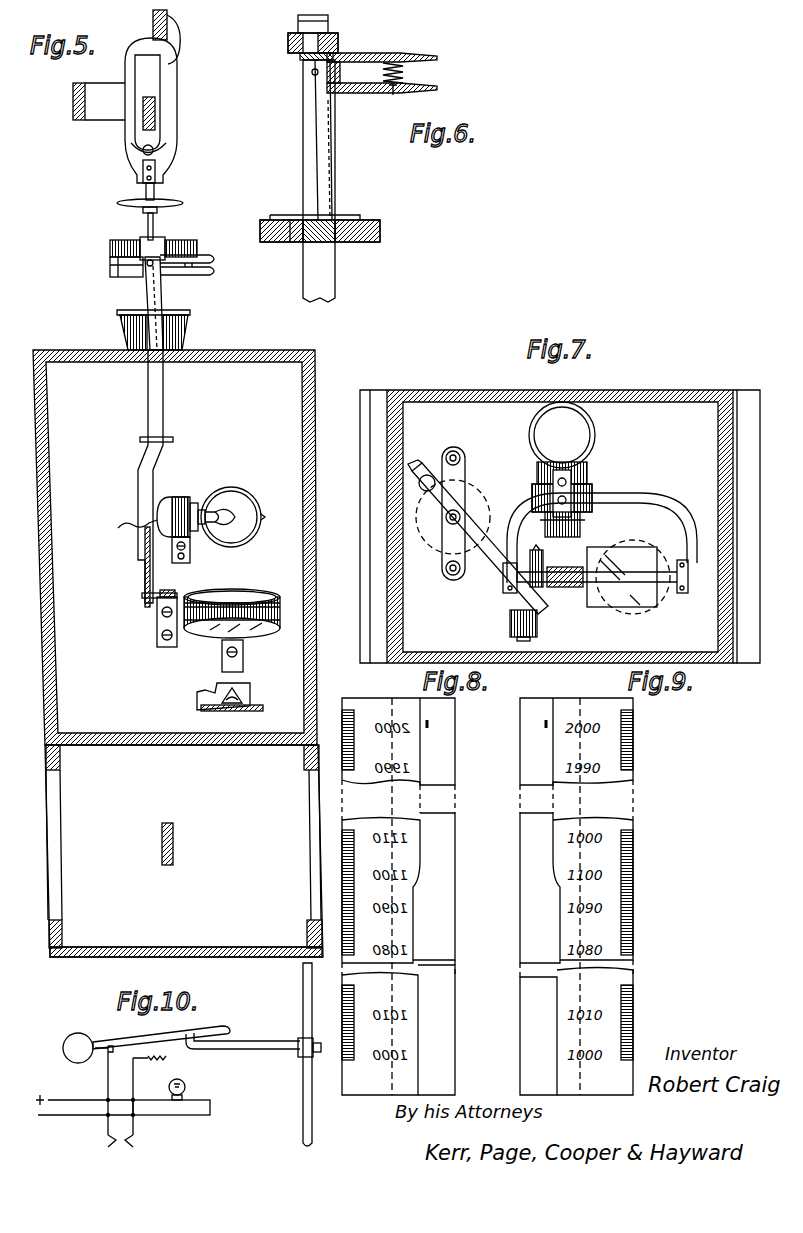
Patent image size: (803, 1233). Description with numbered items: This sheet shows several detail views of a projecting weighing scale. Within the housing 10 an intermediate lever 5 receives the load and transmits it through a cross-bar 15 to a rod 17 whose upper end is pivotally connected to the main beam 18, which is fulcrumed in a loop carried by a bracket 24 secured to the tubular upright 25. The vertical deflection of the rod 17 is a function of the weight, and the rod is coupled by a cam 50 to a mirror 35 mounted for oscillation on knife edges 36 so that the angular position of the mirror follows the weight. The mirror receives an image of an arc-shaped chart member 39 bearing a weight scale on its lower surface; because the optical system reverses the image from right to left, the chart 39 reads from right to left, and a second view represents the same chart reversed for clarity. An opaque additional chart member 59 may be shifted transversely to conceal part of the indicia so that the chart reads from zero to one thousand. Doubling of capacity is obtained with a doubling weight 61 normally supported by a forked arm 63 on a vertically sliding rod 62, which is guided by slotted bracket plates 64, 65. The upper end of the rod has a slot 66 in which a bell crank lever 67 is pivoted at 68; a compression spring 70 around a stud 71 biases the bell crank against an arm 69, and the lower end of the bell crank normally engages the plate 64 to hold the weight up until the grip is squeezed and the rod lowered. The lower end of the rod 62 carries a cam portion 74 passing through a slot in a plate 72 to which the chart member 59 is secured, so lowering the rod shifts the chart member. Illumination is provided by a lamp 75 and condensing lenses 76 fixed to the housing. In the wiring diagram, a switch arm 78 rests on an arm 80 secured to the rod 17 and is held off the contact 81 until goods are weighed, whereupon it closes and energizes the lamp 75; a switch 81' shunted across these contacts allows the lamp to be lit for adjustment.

In FIG. 5, the intermediate lever 5 is at (174, 842).
In FIG. 7, the housing 10 is at (690, 390).
In FIG. 7, the cross-bar 15 is at (450, 565).
In FIG. 10, the rod 17 is at (302, 997).
In FIG. 5, the main beam 18 is at (156, 111).
In FIG. 5, the bracket 24 is at (79, 120).
In FIG. 7, the upright 25 is at (595, 437).
In FIG. 7, the mirror 35 is at (563, 590).
In FIG. 7, the knife edges 36 is at (503, 590).
In FIG. 8, the chart member 39 is at (355, 700).
In FIG. 9, the chart member 39 is at (594, 700).
In FIG. 7, the cam 50 is at (540, 548).
In FIG. 8, the additional chart member 59 is at (445, 755).
In FIG. 9, the additional chart member 59 is at (520, 762).
In FIG. 5, the doubling weight 61 is at (197, 249).
In FIG. 5, the rod 62 is at (160, 473).
In FIG. 6, the forked arm 63 is at (338, 38).
In FIG. 6, the bracket plate 64 is at (345, 216).
In FIG. 5, the bracket plate 65 is at (158, 437).
In FIG. 5, the slot 66 is at (160, 300).
In FIG. 6, the slot 66 is at (305, 165).
In FIG. 6, the bell crank lever 67 is at (314, 122).
In FIG. 5, the pivot 68 is at (147, 266).
In FIG. 6, the pivot 68 is at (311, 75).
In FIG. 5, the arm 69 is at (204, 273).
In FIG. 6, the arm 69 is at (368, 94).
In FIG. 6, the compression spring 70 is at (405, 72).
In FIG. 6, the stud 71 is at (394, 96).
In FIG. 5, the plate 72 is at (143, 598).
In FIG. 5, the cam portion 74 is at (144, 574).
In FIG. 5, the lamp 75 is at (242, 540).
In FIG. 10, the lamp 75 is at (186, 1086).
In FIG. 5, the condensing lenses 76 is at (280, 628).
In FIG. 7, the condensing lenses 76 is at (660, 600).
In FIG. 10, the switch arm 78 is at (172, 1031).
In FIG. 10, the arm 80 is at (258, 1041).
In FIG. 10, the contact member 81 is at (123, 1096).
In FIG. 10, the switch 81' is at (100, 1163).